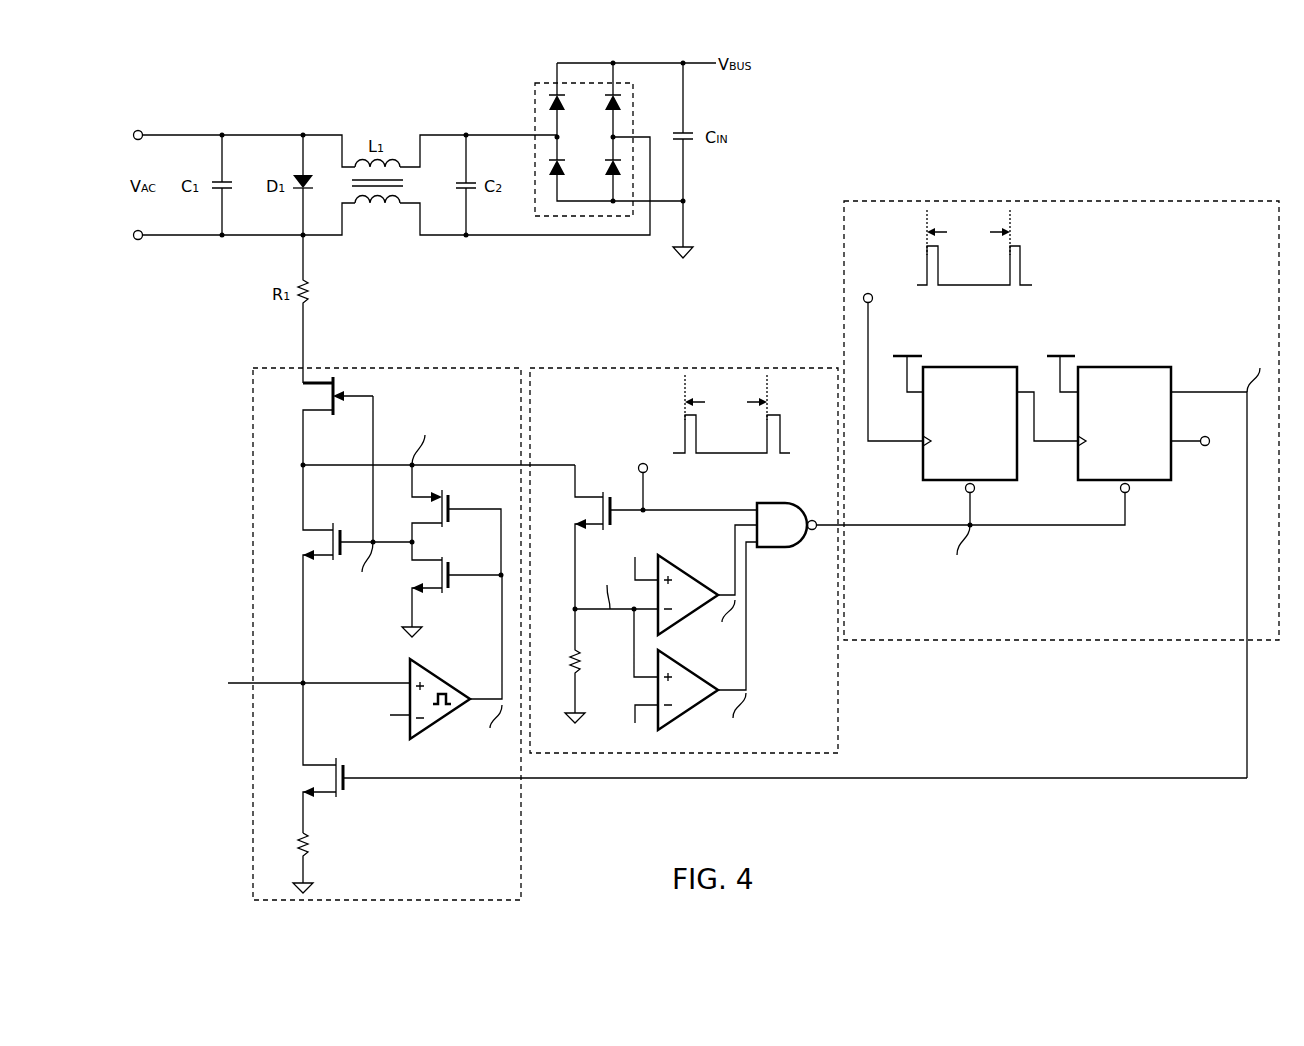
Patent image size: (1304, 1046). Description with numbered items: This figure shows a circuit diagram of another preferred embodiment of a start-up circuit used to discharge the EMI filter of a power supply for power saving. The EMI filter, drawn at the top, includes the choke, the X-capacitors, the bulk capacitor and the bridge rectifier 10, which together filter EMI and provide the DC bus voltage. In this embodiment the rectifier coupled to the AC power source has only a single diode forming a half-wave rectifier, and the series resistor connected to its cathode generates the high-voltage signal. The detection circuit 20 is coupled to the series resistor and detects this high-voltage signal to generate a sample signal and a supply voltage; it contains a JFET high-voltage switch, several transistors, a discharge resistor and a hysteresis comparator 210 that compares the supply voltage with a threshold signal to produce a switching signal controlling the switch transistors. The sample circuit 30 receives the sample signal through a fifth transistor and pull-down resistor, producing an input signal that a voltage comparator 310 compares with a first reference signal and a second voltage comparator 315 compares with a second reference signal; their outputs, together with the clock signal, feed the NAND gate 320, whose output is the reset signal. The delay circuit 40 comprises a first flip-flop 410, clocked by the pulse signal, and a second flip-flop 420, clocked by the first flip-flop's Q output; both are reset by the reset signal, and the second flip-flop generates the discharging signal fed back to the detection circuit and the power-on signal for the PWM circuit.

The bridge rectifier 10 is at (582, 216).
The detection circuit 20 is at (303, 342).
The sample circuit 30 is at (632, 368).
The delay circuit 40 is at (830, 200).
The hysteresis comparator 210 is at (365, 657).
The voltage comparator 310 is at (707, 580).
The second voltage comparator 315 is at (707, 636).
The NAND gate 320 is at (787, 512).
The first flip-flop 410 is at (1000, 418).
The second flip-flop 420 is at (1162, 560).